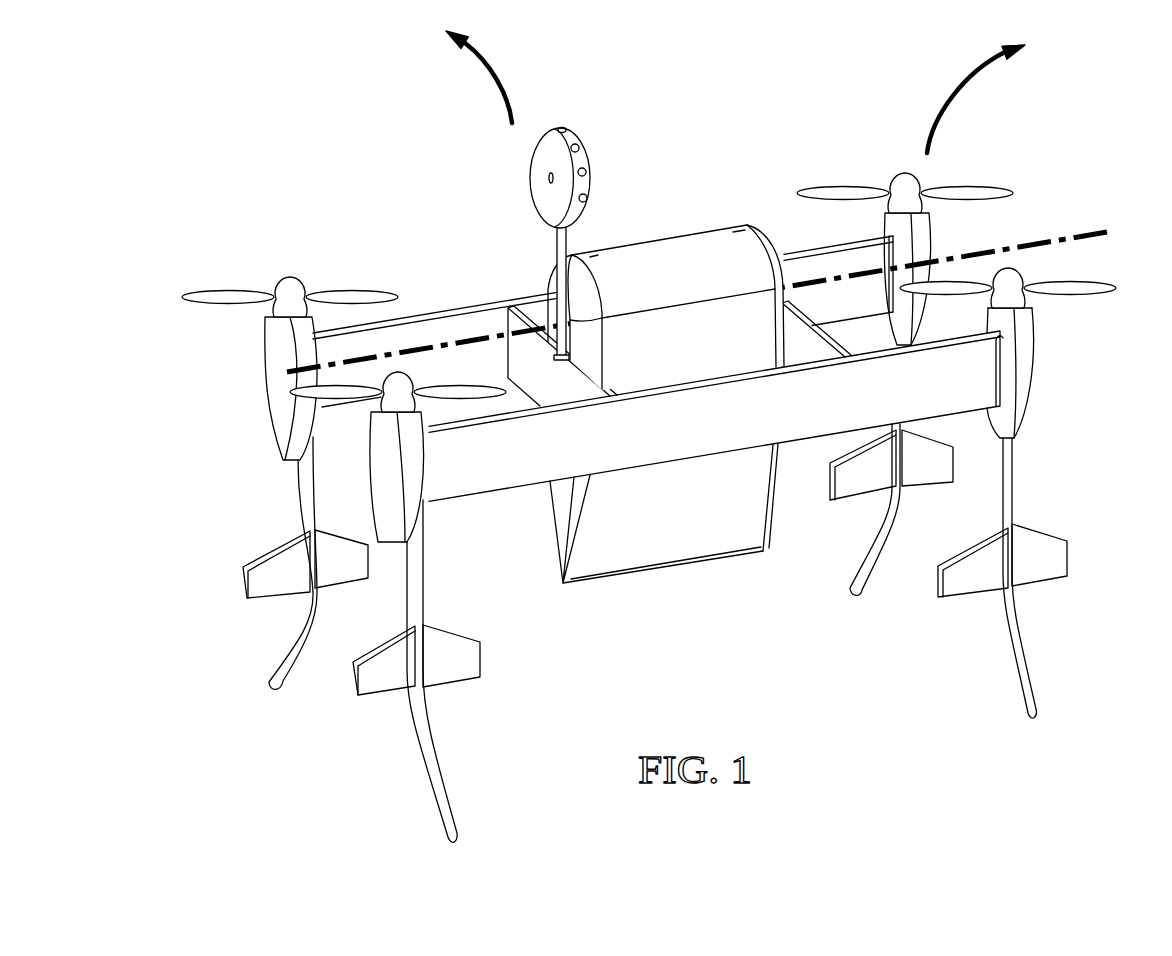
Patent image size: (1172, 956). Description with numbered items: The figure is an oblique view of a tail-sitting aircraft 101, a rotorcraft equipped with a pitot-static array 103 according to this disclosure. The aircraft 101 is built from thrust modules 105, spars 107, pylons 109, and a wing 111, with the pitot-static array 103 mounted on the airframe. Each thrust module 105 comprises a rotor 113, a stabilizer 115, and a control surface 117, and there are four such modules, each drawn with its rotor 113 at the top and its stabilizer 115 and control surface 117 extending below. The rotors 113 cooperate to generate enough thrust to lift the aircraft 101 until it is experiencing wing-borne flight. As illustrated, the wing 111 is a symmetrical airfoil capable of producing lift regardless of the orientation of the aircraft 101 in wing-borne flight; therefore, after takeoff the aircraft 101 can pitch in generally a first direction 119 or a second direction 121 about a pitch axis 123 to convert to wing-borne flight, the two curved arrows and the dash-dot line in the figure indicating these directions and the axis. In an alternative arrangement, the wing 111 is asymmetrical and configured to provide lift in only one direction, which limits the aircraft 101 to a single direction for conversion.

The tail-sitting aircraft 101 is at (303, 147).
The pitot-static array 103 is at (520, 166).
The thrust module 105 is at (947, 235).
The spar 107 is at (413, 316).
The pylon 109 is at (578, 390).
The wing 111 is at (668, 238).
The rotor 113 is at (977, 184).
The stabilizer 115 is at (270, 670).
The control surface 117 is at (244, 586).
The first direction 119 is at (500, 79).
The second direction 121 is at (942, 102).
The pitch axis 123 is at (1090, 232).